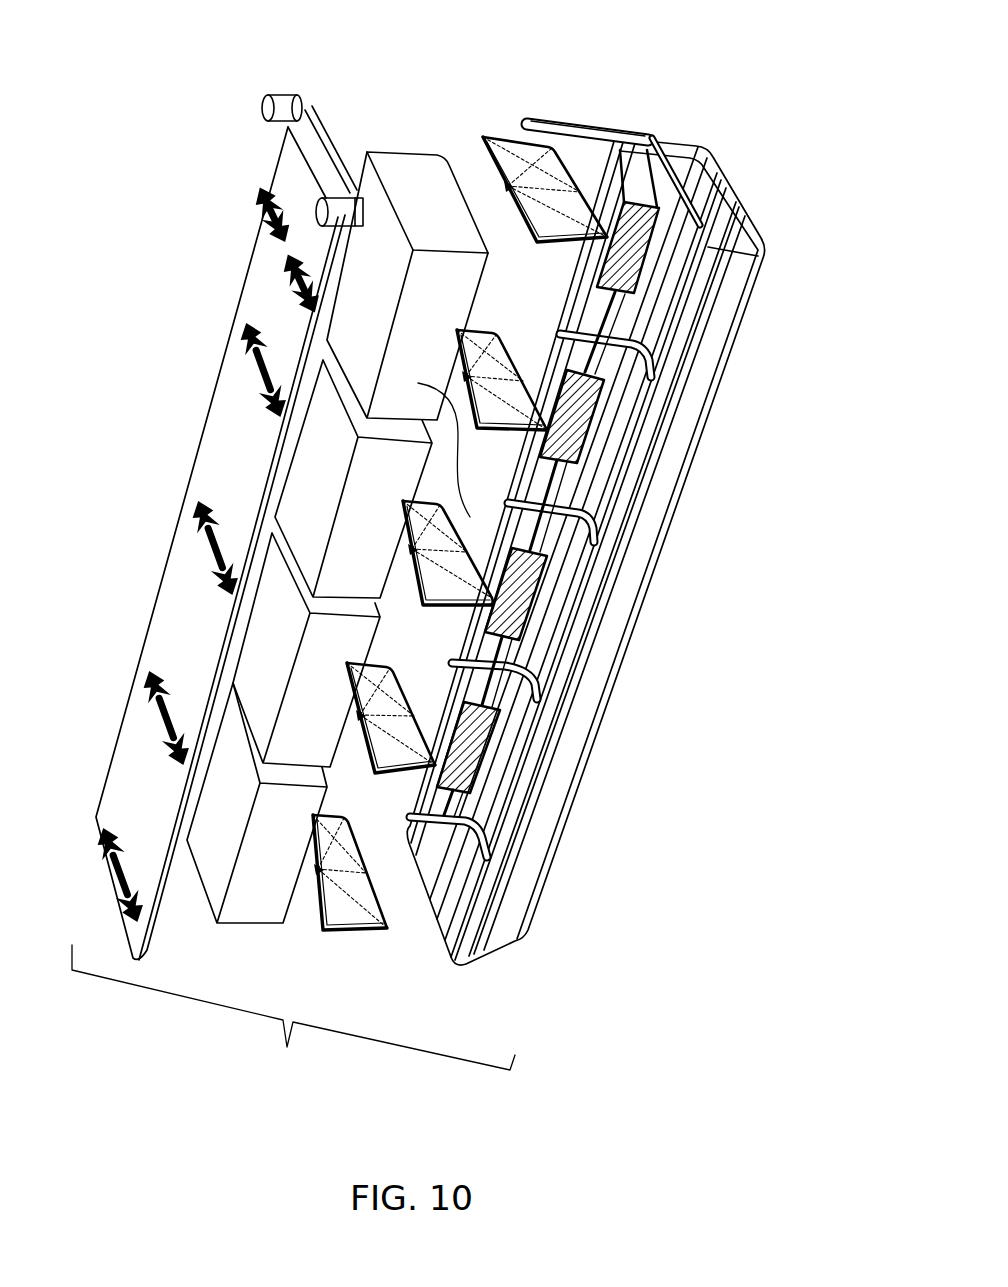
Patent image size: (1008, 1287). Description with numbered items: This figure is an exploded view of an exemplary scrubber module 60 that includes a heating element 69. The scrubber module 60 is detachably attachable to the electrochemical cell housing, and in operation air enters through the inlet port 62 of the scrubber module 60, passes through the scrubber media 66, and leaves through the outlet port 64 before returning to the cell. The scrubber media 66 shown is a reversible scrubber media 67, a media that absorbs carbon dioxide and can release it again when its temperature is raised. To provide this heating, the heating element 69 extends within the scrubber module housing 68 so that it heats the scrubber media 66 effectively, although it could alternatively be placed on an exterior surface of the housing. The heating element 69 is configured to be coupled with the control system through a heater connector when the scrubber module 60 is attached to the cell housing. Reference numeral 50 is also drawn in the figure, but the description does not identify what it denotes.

The scrubber module 60 is at (133, 280).
The inlet port 62 is at (323, 197).
The outlet port 64 is at (268, 100).
The scrubber media 66 is at (393, 183).
The reversible scrubber media 67 is at (432, 183).
The scrubber module housing 68 is at (693, 420).
The heating element 69 is at (660, 200).
The tilted plate 50 is at (397, 708).